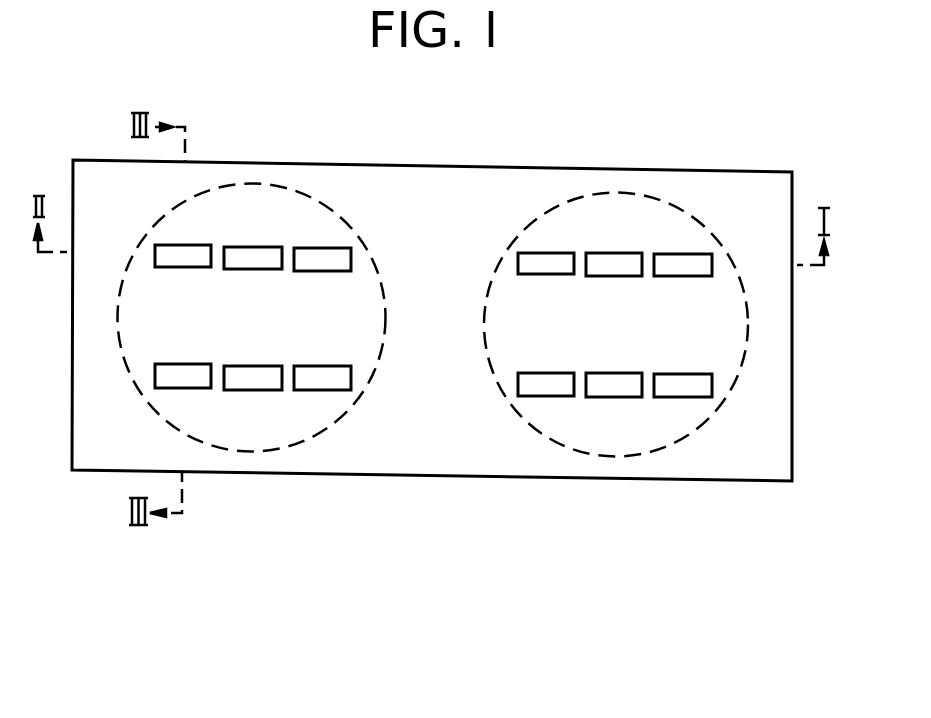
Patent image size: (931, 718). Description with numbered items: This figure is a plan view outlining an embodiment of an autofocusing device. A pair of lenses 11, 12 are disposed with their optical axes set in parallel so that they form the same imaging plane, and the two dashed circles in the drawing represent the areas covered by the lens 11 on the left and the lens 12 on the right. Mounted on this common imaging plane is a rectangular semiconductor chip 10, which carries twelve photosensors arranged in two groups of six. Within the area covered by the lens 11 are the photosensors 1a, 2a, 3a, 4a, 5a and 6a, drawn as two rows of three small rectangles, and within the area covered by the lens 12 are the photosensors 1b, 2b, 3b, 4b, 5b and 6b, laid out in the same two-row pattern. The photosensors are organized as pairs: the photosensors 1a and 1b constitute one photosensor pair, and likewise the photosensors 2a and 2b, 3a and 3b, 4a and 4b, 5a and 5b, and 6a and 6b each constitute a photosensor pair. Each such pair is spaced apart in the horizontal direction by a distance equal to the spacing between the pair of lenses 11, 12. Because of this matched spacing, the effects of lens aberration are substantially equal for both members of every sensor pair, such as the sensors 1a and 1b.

The semiconductor chip 10 is at (762, 481).
The lens 11 is at (348, 412).
The lens 12 is at (678, 443).
The photosensor 1a is at (175, 268).
The photosensor 2a is at (273, 270).
The photosensor 3a is at (307, 272).
The photosensor 4a is at (191, 362).
The photosensor 5a is at (257, 365).
The photosensor 6a is at (323, 365).
The photosensor 1b is at (540, 275).
The photosensor 2b is at (622, 277).
The photosensor 3b is at (697, 277).
The photosensor 4b is at (542, 372).
The photosensor 5b is at (607, 372).
The photosensor 6b is at (677, 373).